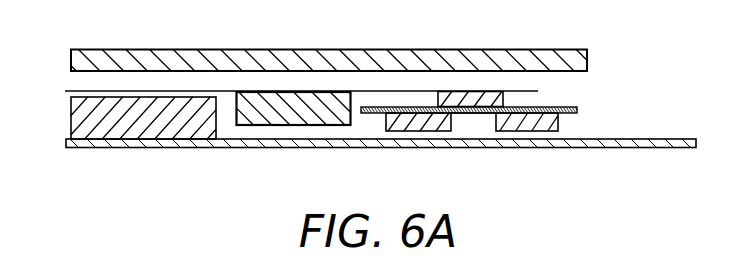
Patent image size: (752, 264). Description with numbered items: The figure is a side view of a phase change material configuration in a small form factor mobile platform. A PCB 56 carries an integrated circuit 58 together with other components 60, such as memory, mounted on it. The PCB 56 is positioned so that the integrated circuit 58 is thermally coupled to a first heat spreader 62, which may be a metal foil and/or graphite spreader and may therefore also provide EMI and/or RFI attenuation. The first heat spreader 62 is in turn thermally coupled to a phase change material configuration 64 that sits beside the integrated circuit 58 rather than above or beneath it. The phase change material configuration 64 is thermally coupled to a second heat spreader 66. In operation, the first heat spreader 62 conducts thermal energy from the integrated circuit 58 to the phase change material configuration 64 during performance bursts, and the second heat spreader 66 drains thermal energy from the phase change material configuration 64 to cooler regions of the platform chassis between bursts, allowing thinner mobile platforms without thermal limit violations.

The PCB 56 is at (572, 107).
The integrated circuit 58 is at (483, 110).
The other components 60 is at (414, 120).
The first heat spreader 62 is at (519, 90).
The phase change material configuration 64 is at (294, 116).
The second heat spreader 66 is at (73, 90).